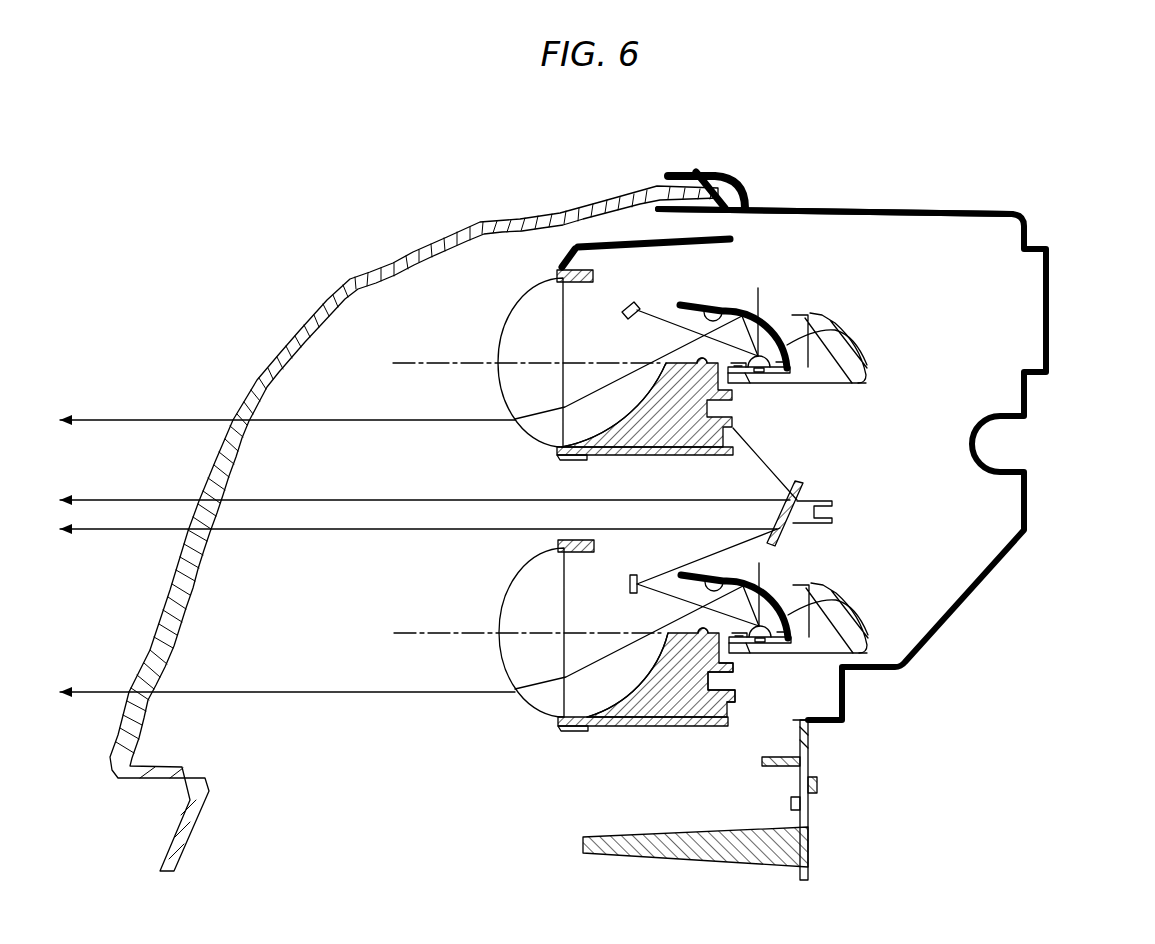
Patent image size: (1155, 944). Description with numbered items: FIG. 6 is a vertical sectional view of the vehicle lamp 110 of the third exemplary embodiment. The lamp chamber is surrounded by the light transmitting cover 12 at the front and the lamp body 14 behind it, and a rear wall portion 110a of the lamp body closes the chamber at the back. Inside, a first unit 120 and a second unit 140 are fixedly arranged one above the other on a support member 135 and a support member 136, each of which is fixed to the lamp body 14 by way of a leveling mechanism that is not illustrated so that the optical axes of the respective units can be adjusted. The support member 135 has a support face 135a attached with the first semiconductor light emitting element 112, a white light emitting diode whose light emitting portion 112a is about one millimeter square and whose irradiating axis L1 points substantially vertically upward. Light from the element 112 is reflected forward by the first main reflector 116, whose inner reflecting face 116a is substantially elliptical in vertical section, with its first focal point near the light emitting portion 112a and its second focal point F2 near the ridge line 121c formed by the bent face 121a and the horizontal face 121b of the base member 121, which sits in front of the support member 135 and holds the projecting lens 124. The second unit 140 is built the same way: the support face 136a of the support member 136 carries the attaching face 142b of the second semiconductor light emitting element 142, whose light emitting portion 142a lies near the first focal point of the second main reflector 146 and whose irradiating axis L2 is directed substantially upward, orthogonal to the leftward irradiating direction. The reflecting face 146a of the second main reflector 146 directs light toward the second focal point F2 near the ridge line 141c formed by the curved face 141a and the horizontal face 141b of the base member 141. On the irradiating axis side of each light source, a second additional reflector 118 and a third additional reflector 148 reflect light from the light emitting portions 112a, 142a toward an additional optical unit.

The light transmitting cover 12 is at (563, 210).
The lamp body 14 is at (840, 208).
The vehicle lamp 110 is at (1064, 190).
The rear wall of lamp body 110a is at (1023, 304).
The first semiconductor light emitting element 112 is at (772, 347).
The light emitting portion 112a is at (766, 372).
The first main reflector 116 is at (771, 311).
The reflecting face 116a is at (742, 303).
The second additional reflector 118 is at (640, 303).
The first unit 120 is at (437, 332).
The base member 121 is at (605, 460).
The bent face 121a is at (637, 403).
The horizontal face 121b is at (738, 395).
The ridge line 121c is at (664, 362).
The projecting lens 124 is at (538, 300).
The support member 135 is at (852, 342).
The support face 135a is at (864, 378).
The support member 136 is at (893, 623).
The support face 136a is at (855, 619).
The second unit 140 is at (502, 613).
The base member 141 is at (646, 720).
The curved face 141a is at (618, 675).
The horizontal face 141b is at (793, 716).
The ridge line 141c is at (642, 613).
The second semiconductor light emitting element 142 is at (819, 617).
The light emitting portion 142a is at (857, 673).
The attaching face 142b is at (750, 383).
The second main reflector 146 is at (815, 586).
The reflecting face 146a is at (731, 569).
The third additional reflector 148 is at (647, 608).
The optical axis of first light source L1 is at (768, 298).
The irradiating axis L2 is at (818, 571).
The second focal point F2 is at (664, 362).